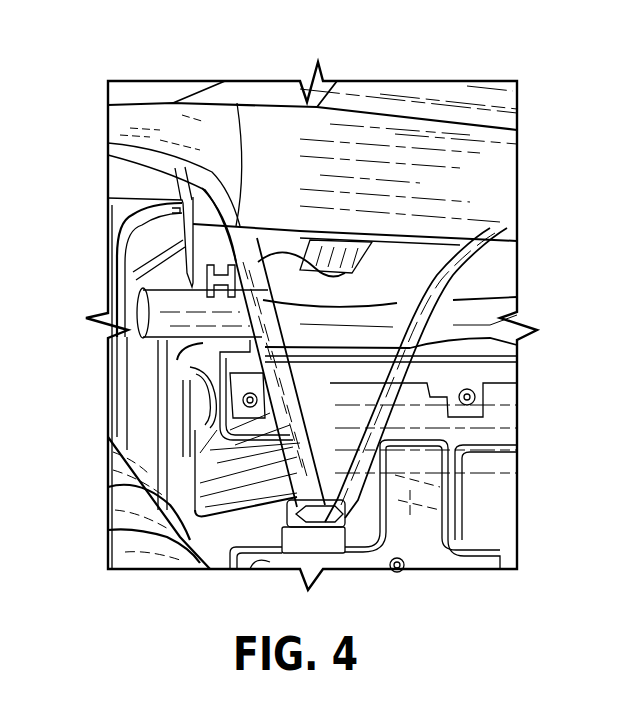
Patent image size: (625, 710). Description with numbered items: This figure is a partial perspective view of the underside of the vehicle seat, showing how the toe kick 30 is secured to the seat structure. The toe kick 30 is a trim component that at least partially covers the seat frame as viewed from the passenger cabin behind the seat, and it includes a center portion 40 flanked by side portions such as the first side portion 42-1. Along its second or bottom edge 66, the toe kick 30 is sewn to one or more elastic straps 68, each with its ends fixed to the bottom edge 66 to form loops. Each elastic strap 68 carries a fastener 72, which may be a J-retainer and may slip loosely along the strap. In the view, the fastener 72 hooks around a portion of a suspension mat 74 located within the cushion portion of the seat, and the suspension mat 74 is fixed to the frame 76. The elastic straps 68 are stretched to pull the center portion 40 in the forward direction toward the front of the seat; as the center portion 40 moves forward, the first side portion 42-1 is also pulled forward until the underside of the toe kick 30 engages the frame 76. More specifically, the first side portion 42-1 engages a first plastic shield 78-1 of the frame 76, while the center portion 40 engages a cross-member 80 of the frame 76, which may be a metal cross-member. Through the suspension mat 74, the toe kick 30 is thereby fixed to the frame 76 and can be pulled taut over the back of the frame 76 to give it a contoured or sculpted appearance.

The toe kick 30 is at (492, 168).
The center portion 40 is at (398, 131).
The first side portion 42-1 is at (128, 134).
The first plastic shield 78-1 is at (118, 180).
The elastic strap 68 is at (480, 241).
The cross-member 80 is at (140, 295).
The bottom edge 66 is at (396, 250).
The frame 76 is at (125, 385).
The suspension mat 74 is at (262, 550).
The fastener 72 is at (323, 545).